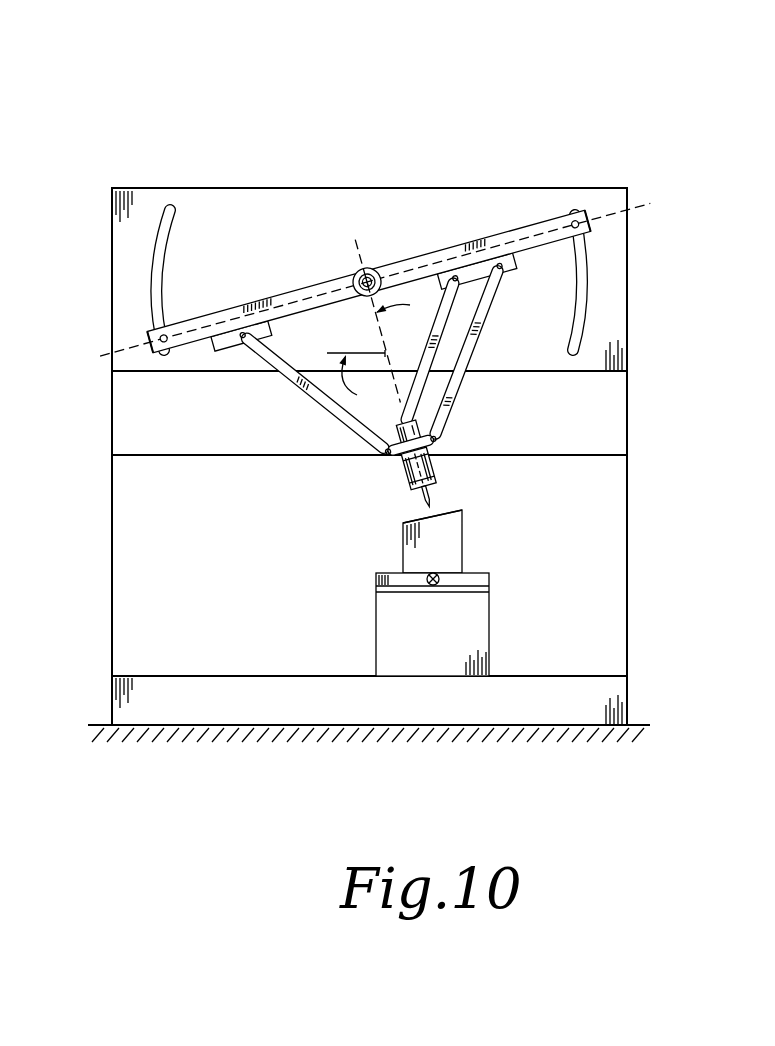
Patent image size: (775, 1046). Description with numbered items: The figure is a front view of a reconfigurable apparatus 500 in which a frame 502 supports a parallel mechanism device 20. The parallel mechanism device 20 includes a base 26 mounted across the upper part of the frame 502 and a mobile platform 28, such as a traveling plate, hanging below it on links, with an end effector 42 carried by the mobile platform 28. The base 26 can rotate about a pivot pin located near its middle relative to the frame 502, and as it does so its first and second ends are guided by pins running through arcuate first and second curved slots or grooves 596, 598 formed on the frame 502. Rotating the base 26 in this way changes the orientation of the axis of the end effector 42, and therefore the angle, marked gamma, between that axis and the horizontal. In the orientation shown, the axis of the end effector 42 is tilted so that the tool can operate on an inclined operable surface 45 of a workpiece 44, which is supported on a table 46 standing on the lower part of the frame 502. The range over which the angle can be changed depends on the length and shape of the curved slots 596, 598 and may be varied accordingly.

The reconfigurable apparatus 500 is at (181, 160).
The frame 502 is at (506, 200).
The first curved slot 596 is at (162, 265).
The second curved slot 598 is at (583, 312).
The base 26 is at (385, 302).
The parallel mechanism device 20 is at (290, 417).
The mobile platform 28 is at (403, 450).
The end effector 42 is at (433, 470).
The workpiece 44 is at (462, 548).
The operable surface 45 is at (447, 512).
The table 46 is at (480, 632).